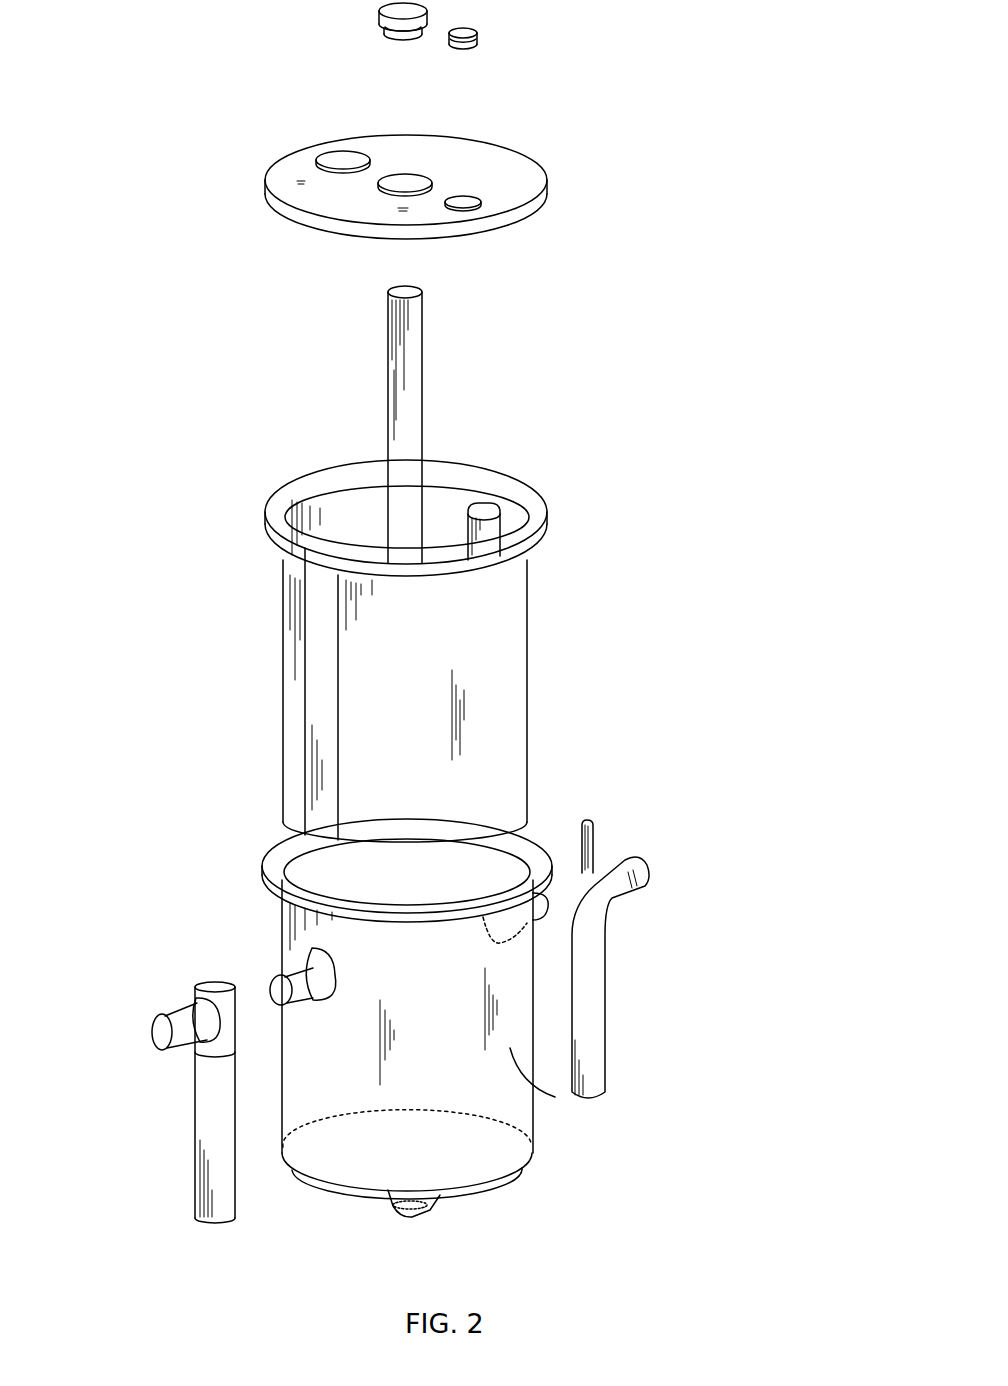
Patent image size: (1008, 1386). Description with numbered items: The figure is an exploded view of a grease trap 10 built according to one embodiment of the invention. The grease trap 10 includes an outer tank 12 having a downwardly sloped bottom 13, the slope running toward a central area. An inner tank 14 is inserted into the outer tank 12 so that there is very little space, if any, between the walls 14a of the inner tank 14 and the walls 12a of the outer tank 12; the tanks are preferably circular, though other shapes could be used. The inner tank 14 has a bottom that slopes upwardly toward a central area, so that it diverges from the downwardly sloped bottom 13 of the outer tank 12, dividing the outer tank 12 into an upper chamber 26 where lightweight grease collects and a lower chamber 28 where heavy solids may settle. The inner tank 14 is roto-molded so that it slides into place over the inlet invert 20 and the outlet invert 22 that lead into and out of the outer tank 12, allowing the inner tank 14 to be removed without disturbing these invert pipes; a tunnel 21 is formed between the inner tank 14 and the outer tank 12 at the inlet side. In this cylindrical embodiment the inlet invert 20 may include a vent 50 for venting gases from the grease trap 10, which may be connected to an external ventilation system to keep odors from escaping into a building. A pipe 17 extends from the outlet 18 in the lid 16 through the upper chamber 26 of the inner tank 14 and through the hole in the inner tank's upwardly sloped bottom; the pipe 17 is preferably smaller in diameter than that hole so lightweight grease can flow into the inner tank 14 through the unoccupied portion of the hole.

The grease trap 10 is at (712, 494).
The outer tank 12 is at (537, 1130).
The walls of the outer tank 12a is at (555, 1097).
The downwardly sloped bottom 13 is at (450, 1203).
The inner tank 14 is at (507, 703).
The walls of the inner tank 14a is at (500, 650).
The lid 16 is at (530, 180).
The pipe 17 is at (423, 425).
The outlet 18 is at (370, 157).
The inlet invert 20 is at (650, 870).
The tunnel 21 is at (488, 533).
The outlet invert 22 is at (193, 1000).
The upper chamber 26 is at (452, 508).
The lower chamber 28 is at (437, 1168).
The vent 50 is at (595, 830).